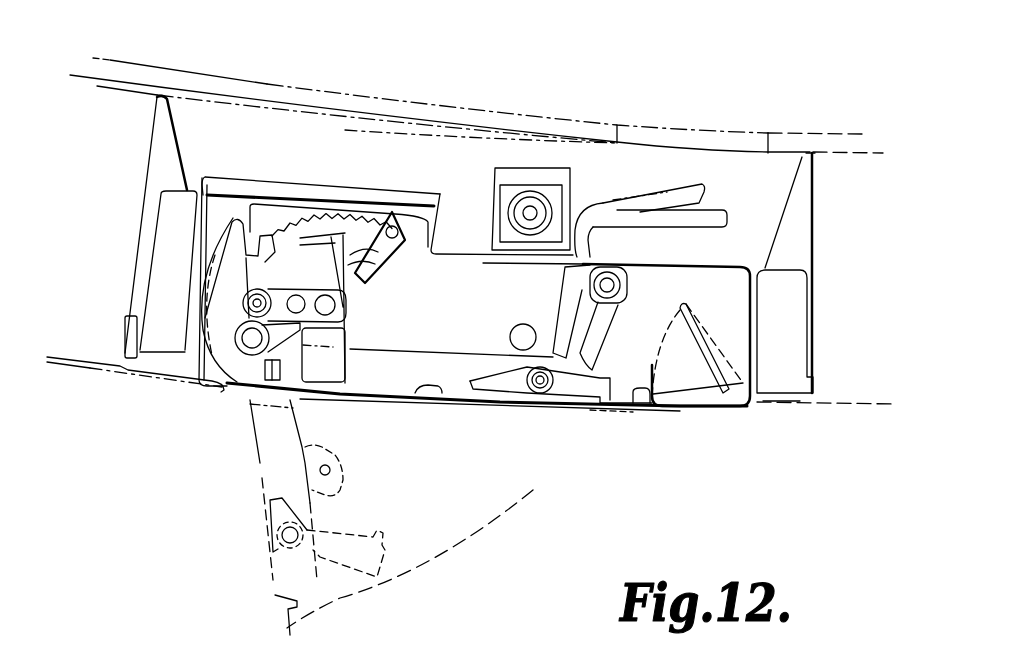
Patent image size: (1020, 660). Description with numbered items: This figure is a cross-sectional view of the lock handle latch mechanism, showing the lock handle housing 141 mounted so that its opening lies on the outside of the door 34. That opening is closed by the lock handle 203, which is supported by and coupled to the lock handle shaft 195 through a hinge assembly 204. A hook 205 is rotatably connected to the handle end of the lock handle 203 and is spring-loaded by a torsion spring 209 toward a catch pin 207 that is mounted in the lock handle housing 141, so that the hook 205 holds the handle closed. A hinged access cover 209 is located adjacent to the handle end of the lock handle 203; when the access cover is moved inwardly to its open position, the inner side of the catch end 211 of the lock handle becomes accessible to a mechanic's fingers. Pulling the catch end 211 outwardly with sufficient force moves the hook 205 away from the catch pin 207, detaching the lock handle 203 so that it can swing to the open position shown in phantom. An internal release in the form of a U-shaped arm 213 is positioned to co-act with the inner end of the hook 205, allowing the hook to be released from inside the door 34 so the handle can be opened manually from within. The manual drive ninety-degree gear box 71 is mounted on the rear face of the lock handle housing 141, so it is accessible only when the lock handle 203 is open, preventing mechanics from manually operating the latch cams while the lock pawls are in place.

The door 34 is at (883, 260).
The manual drive 90° gear box 71 is at (533, 167).
The lock handle housing 141 is at (352, 187).
The lock handle shaft 195 is at (343, 307).
The lock handle 203 is at (270, 498).
The hinge assembly 204 is at (231, 411).
The hook 205 is at (584, 405).
The catch pin 207 is at (576, 309).
The torsion spring 209 is at (520, 395).
The catch end 211 is at (648, 407).
The U-shaped arm 213 is at (713, 210).